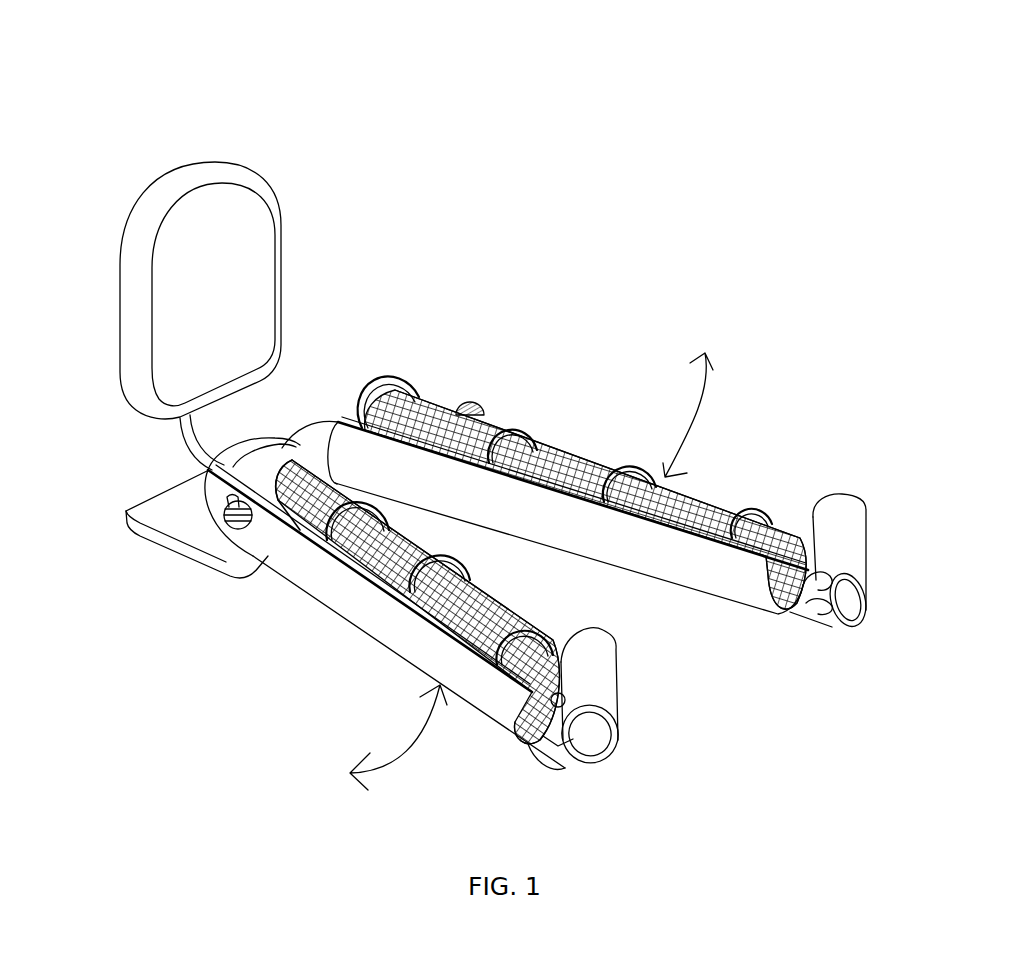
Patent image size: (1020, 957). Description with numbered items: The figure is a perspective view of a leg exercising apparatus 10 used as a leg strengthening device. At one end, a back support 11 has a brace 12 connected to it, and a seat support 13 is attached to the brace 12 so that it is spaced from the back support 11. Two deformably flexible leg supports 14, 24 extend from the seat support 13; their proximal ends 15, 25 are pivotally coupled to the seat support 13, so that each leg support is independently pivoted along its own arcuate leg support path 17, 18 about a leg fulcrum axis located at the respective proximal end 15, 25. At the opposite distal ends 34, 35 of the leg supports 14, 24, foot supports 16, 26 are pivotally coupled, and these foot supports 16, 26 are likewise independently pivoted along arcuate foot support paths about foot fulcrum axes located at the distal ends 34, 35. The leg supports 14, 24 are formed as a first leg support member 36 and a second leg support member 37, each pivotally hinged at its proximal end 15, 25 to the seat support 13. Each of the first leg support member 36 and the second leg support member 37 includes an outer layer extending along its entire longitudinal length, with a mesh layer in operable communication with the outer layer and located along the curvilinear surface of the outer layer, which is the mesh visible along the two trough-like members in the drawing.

The leg exercising apparatus 10 is at (470, 125).
The back support 11 is at (215, 212).
The brace 12 is at (195, 428).
The seat support 13 is at (178, 522).
The leg support 14 is at (343, 654).
The proximal end 15 is at (210, 508).
The foot support 16 is at (597, 738).
The arcuate leg support path 17 is at (402, 767).
The arcuate leg support path 18 is at (693, 393).
The leg support 24 is at (723, 618).
The proximal end 25 is at (360, 465).
The foot support 26 is at (848, 522).
The distal end 34 is at (533, 733).
The distal end 35 is at (787, 620).
The first leg support member 36 is at (300, 587).
The second leg support member 37 is at (583, 458).